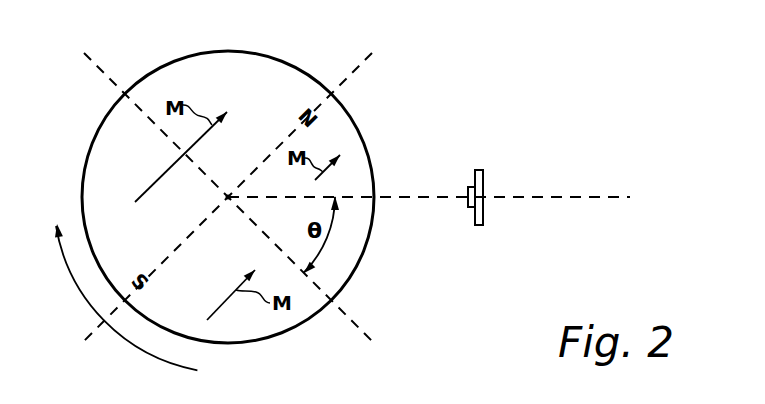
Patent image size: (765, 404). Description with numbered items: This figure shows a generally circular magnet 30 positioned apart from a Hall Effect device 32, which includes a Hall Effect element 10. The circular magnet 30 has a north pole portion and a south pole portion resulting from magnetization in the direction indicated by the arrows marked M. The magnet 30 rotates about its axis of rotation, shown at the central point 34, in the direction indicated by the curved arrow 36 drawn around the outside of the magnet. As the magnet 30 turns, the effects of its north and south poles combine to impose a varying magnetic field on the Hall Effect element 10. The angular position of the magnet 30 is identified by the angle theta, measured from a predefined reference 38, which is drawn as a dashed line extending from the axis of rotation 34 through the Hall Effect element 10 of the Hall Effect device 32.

The Hall Effect element 10 is at (468, 200).
The circular magnet 30 is at (255, 52).
The Hall Effect device 32 is at (483, 176).
The axis of rotation 34 is at (228, 195).
The direction of rotation arrow 36 is at (75, 289).
The predefined reference 38 is at (557, 198).